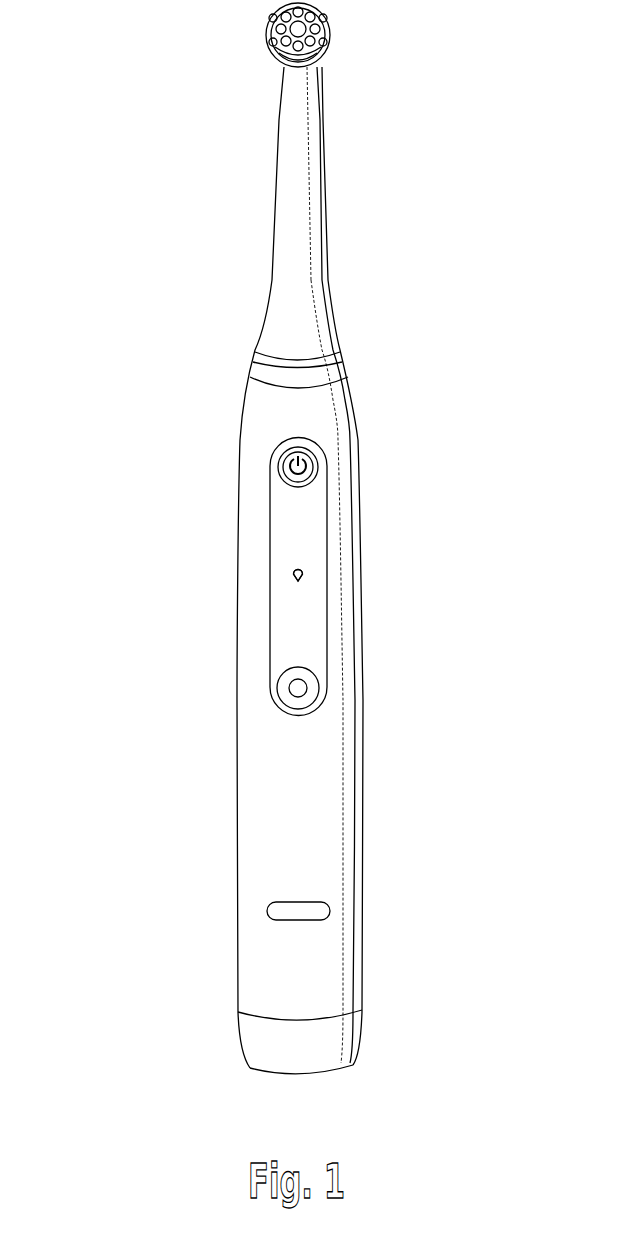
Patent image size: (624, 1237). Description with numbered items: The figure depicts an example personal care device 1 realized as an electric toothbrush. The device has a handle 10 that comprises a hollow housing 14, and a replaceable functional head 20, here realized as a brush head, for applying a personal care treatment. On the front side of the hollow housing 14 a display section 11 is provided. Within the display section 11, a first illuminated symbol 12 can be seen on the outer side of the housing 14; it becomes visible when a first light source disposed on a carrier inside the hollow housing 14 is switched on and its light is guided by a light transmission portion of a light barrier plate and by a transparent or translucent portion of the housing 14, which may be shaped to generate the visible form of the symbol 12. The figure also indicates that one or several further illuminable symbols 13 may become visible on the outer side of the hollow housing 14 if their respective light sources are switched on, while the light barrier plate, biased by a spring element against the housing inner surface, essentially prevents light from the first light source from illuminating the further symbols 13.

The personal care device 1 is at (160, 195).
The replaceable functional head 20 is at (342, 190).
The handle 10 is at (375, 767).
The hollow housing 14 is at (357, 448).
The further illuminable symbols 13 is at (300, 530).
The first illuminated symbol 12 is at (292, 578).
The display section 11 is at (321, 573).